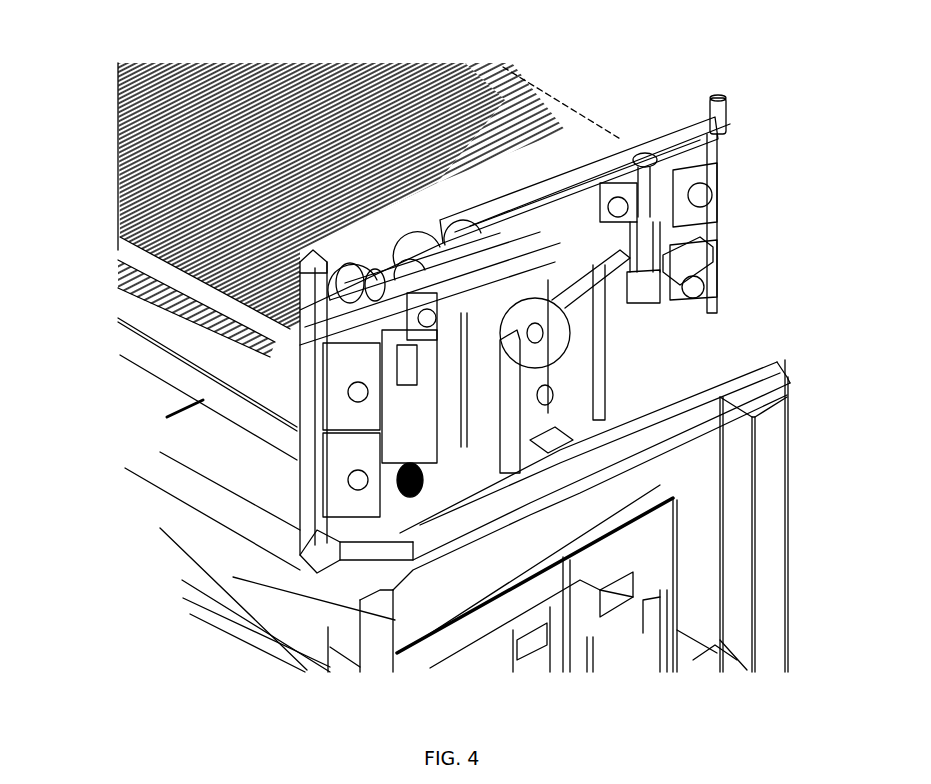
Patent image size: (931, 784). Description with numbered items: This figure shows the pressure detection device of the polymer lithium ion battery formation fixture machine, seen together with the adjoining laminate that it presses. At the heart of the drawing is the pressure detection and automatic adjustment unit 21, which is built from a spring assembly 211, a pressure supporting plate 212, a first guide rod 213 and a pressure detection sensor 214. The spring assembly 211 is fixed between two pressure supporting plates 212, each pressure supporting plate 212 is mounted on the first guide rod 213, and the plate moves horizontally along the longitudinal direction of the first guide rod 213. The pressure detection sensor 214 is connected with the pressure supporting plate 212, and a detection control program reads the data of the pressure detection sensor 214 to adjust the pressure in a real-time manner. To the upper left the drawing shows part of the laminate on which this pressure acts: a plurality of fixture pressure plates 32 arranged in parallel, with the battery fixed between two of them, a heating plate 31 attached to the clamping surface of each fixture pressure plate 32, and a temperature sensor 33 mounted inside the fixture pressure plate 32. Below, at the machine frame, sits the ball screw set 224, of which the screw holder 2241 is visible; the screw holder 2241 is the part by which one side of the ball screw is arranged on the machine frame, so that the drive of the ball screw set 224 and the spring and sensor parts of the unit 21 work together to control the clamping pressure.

The pressure detection and automatic adjustment unit 21 is at (450, 222).
The spring assembly 211 is at (505, 213).
The pressure supporting plate 212 is at (393, 241).
The first guide rod 213 is at (427, 318).
The pressure detection sensor 214 is at (550, 338).
The temperature sensor 33 is at (282, 153).
The heating plate 31 is at (238, 352).
The fixture pressure plate 32 is at (290, 327).
The ball screw set 224 is at (275, 435).
The screw holder 2241 is at (335, 480).